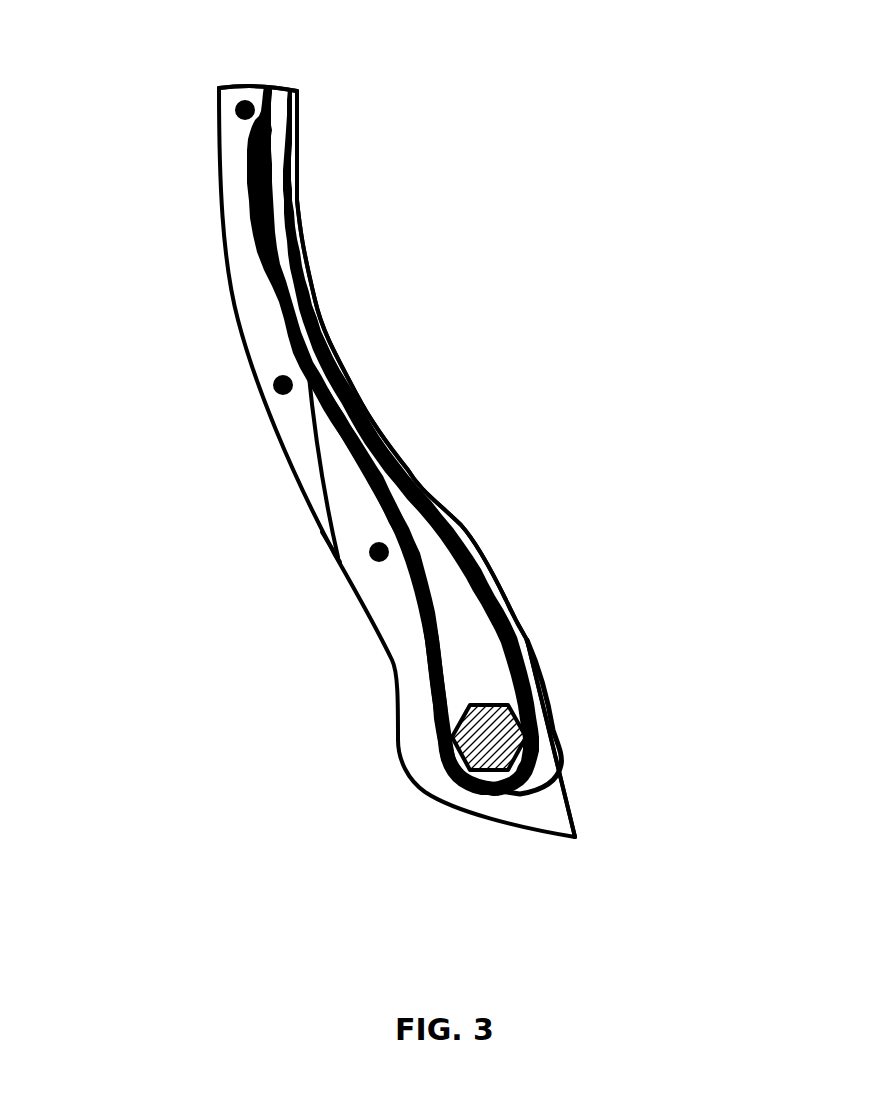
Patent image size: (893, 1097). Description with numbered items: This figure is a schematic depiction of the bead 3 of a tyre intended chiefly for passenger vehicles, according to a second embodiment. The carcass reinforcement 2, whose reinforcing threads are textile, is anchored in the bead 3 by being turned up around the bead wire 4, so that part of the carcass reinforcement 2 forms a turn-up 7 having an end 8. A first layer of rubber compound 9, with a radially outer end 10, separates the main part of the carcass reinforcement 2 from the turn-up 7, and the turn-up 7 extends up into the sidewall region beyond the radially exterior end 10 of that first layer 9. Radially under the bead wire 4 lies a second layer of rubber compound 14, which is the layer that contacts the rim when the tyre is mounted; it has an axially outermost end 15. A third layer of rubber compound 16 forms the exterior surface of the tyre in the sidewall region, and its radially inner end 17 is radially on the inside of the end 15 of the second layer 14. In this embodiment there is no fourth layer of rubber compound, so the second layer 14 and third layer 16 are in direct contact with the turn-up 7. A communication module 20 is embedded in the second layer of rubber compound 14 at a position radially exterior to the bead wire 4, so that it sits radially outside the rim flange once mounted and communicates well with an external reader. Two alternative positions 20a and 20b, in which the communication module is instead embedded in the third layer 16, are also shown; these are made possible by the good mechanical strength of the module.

The carcass reinforcement layer 2 is at (440, 512).
The bead 3 is at (447, 236).
The bead wire 4 is at (483, 740).
The turn-up 7 is at (262, 241).
The end of the turn-up 8 is at (255, 127).
The first layer of rubber compound 9 is at (465, 628).
The radially outer end of the first layer of rubber compound 10 is at (362, 423).
The second layer of rubber compound 14 is at (430, 773).
The axially outermost end of the second layer of rubber compound 15 is at (317, 397).
The third layer of rubber compound 16 is at (253, 328).
The radially inner end of the third layer of rubber compound 17 is at (330, 548).
The communication module 20 is at (377, 563).
The alternative position of the communication module 20a is at (277, 395).
The alternative position of the communication module 20b is at (237, 100).